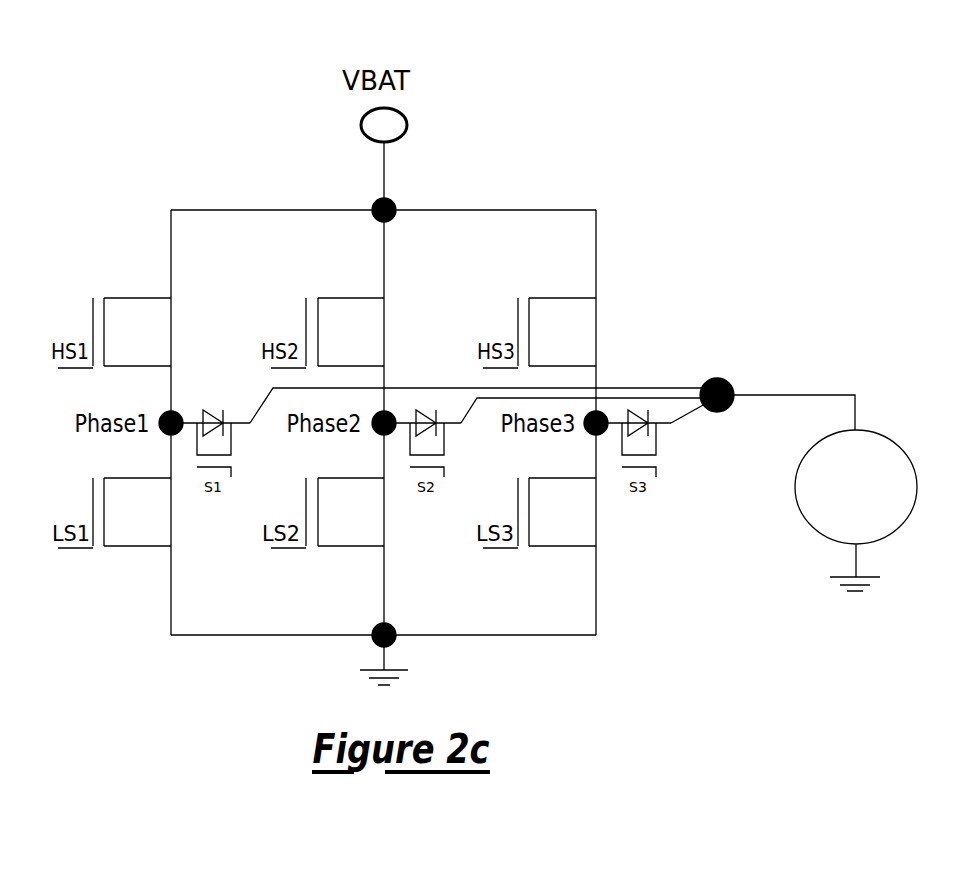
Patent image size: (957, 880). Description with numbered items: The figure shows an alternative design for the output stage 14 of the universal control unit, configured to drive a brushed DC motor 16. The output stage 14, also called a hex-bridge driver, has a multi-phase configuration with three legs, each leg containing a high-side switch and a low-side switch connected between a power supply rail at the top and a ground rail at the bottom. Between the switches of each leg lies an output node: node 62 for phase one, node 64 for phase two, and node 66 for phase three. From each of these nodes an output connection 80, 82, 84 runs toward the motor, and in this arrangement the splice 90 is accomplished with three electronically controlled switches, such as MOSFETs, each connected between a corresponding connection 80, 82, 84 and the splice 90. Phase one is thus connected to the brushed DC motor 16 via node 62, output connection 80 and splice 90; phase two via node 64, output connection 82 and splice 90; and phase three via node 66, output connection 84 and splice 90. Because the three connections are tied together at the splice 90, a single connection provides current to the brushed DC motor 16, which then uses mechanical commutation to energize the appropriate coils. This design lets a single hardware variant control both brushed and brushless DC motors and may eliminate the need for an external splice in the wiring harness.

The output stage 14 is at (189, 142).
The brushed DC motor 16 is at (841, 347).
The output node 62 is at (181, 416).
The output node 64 is at (393, 412).
The output node 66 is at (607, 412).
The output connection 80 is at (253, 426).
The output connection 82 is at (465, 427).
The output connection 84 is at (672, 426).
The splice 90 is at (729, 384).